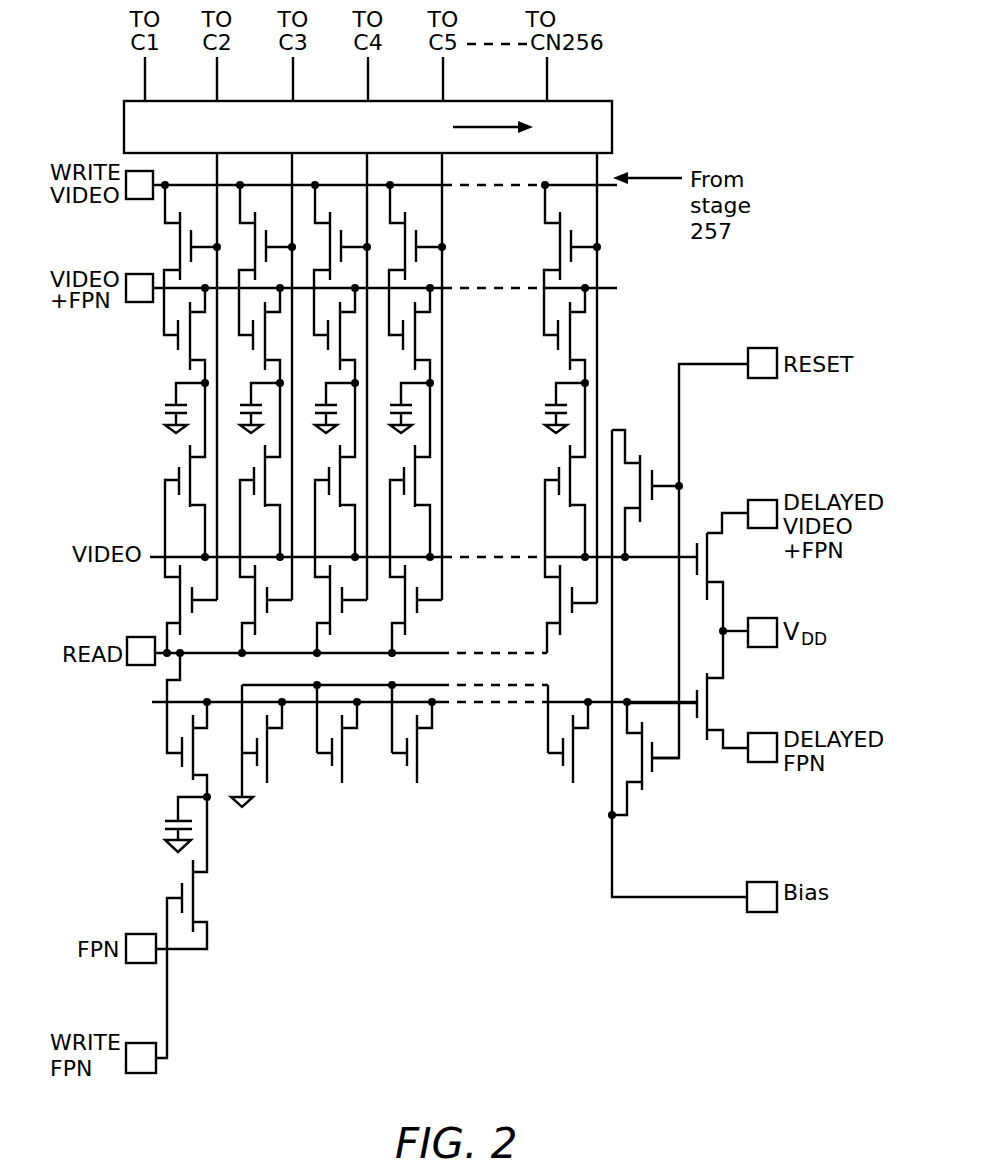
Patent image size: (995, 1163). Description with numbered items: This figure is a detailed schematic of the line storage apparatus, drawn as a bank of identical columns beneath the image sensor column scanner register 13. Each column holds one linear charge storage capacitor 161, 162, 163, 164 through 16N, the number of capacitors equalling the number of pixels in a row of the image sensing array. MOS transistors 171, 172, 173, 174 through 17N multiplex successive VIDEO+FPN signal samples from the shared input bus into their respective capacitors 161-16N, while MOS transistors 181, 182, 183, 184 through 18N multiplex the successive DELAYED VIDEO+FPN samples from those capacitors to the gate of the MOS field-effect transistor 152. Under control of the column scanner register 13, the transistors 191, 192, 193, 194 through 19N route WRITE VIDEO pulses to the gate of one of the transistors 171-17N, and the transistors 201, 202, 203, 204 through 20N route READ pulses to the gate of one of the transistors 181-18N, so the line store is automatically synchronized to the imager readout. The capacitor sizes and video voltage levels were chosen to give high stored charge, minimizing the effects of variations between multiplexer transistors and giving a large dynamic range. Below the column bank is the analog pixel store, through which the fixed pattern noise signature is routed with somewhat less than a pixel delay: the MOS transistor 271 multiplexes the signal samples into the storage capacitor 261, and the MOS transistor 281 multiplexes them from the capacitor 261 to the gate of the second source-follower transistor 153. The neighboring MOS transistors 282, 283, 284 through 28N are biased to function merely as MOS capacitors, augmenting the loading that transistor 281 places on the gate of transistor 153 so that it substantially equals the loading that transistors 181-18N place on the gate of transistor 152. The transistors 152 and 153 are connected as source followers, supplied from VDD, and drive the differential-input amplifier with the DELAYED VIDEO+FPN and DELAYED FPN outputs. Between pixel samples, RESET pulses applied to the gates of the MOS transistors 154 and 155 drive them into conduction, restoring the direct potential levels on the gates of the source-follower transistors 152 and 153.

The image sensor column scanner register 13 is at (613, 118).
The MOS transistor 191 is at (174, 224).
The MOS transistor 192 is at (266, 258).
The MOS transistor 193 is at (341, 258).
The MOS transistor 194 is at (416, 258).
The MOS transistor 19N is at (549, 258).
The MOS transistor 171 is at (178, 349).
The MOS transistor 172 is at (252, 335).
The MOS transistor 173 is at (327, 335).
The MOS transistor 174 is at (402, 335).
The MOS transistor 17N is at (556, 335).
The linear charge storage capacitor 161 is at (165, 414).
The linear charge storage capacitor 162 is at (250, 425).
The linear charge storage capacitor 163 is at (325, 425).
The linear charge storage capacitor 164 is at (400, 425).
The linear charge storage capacitor 16N is at (556, 425).
The MOS transistor 181 is at (194, 507).
The MOS transistor 182 is at (262, 480).
The MOS transistor 183 is at (337, 480).
The MOS transistor 184 is at (412, 480).
The MOS transistor 18N is at (567, 480).
The MOS transistor 201 is at (176, 614).
The MOS transistor 202 is at (245, 611).
The MOS transistor 203 is at (320, 611).
The MOS transistor 204 is at (395, 611).
The MOS transistor 20N is at (546, 609).
The MOS transistor 281 is at (192, 780).
The MOS transistor 282 is at (269, 768).
The MOS transistor 283 is at (344, 768).
The MOS transistor 284 is at (419, 768).
The MOS transistor 28N is at (574, 787).
The storage capacitor 261 is at (165, 826).
The MOS transistor 271 is at (198, 918).
The MOS field-effect transistor 152 is at (707, 533).
The MOS field-effect transistor 153 is at (707, 675).
The MOS transistor 154 is at (642, 458).
The MOS transistor 155 is at (645, 787).